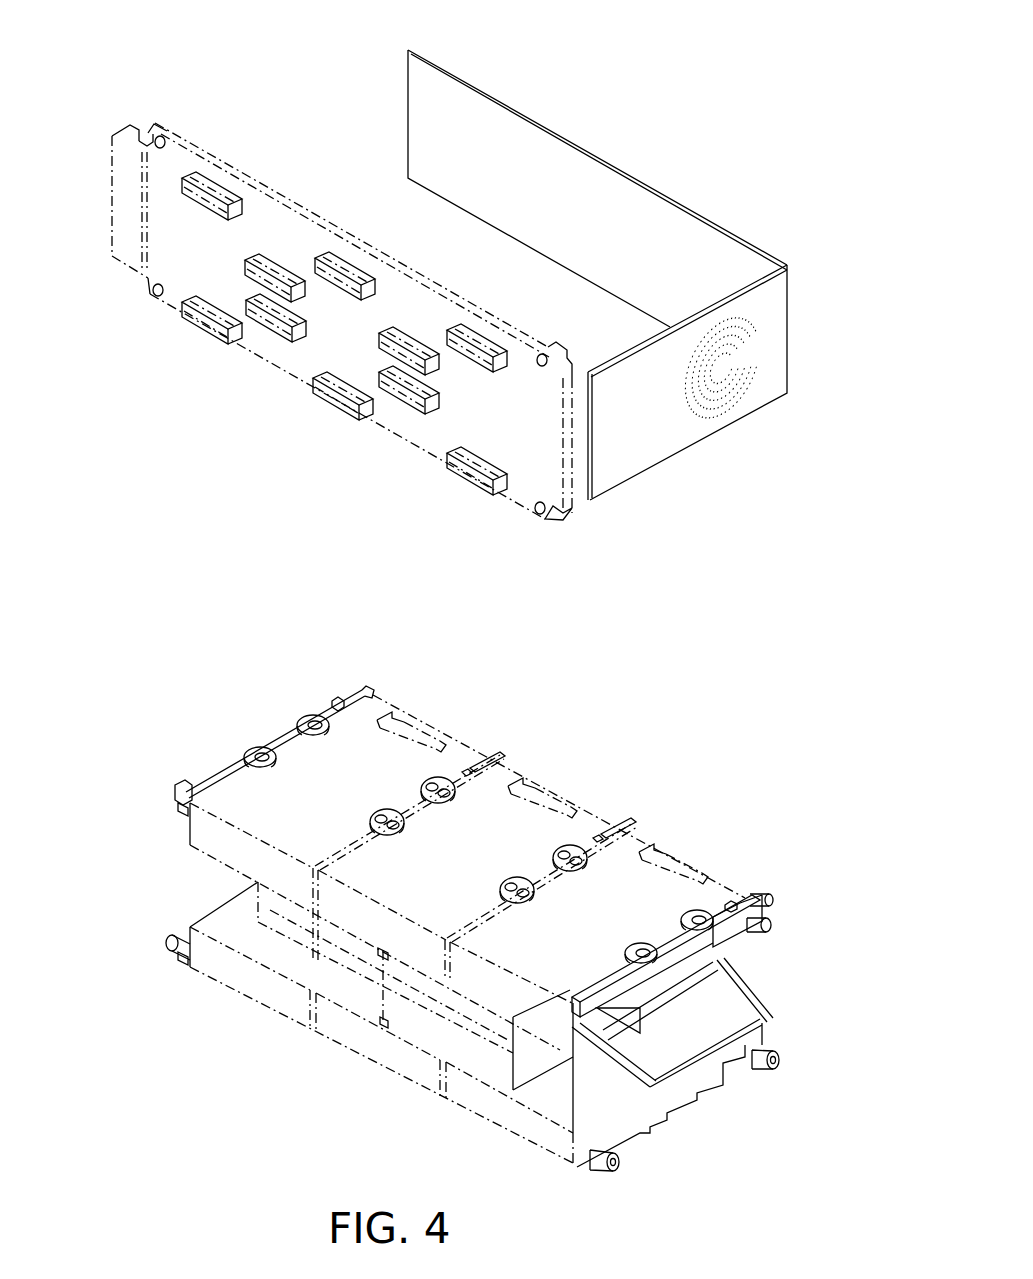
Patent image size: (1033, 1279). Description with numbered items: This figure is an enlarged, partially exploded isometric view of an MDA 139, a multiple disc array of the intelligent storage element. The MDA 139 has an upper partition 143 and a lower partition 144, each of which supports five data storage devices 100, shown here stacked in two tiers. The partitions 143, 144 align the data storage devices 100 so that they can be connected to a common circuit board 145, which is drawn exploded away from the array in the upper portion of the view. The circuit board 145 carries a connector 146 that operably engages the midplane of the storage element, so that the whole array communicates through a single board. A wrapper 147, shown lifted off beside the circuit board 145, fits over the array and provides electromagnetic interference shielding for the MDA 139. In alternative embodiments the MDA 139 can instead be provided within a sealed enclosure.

The data storage device 100 is at (296, 762).
The MDA 139 is at (668, 44).
The upper partition 143 is at (746, 950).
The lower partition 144 is at (767, 1020).
The circuit board 145 is at (165, 125).
The connector 146 is at (130, 126).
The wrapper 147 is at (468, 76).